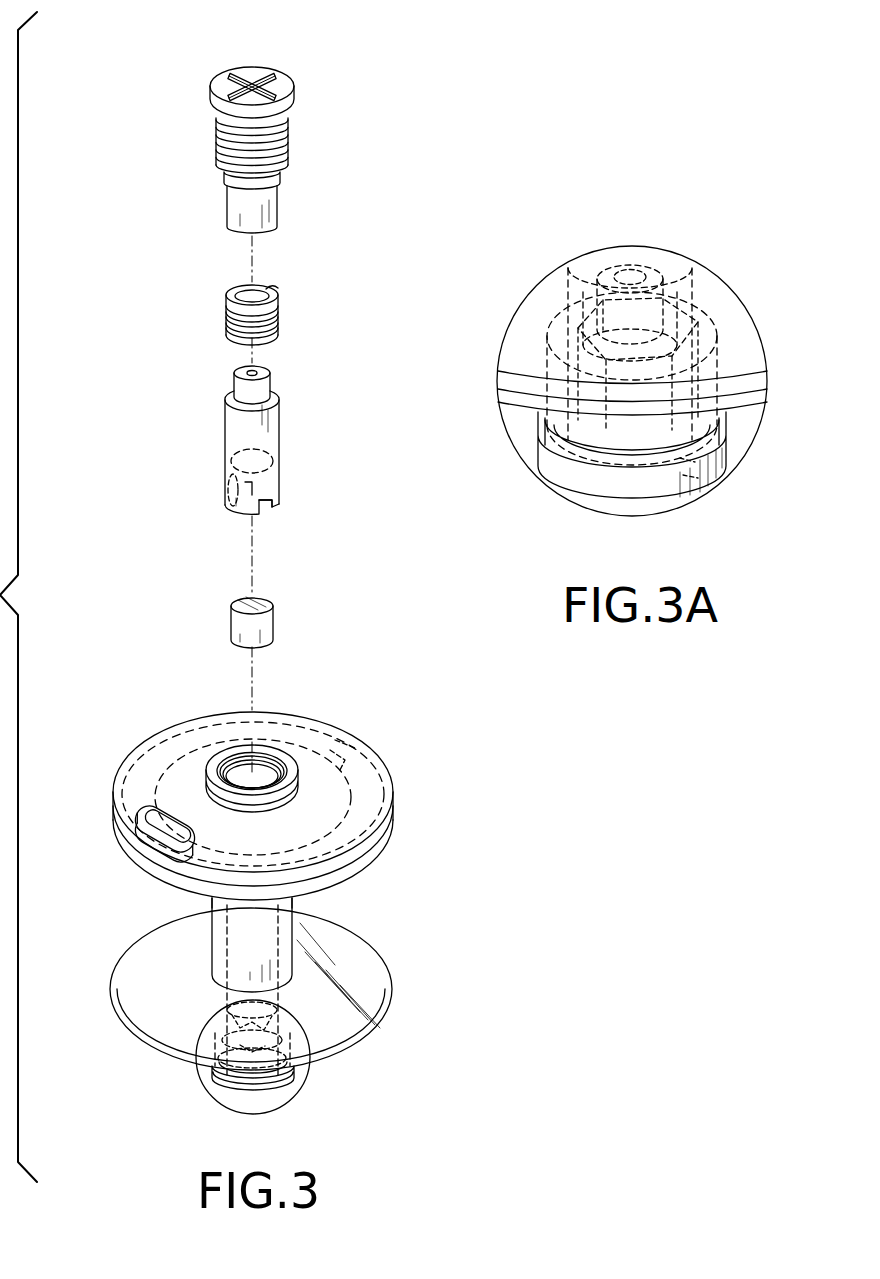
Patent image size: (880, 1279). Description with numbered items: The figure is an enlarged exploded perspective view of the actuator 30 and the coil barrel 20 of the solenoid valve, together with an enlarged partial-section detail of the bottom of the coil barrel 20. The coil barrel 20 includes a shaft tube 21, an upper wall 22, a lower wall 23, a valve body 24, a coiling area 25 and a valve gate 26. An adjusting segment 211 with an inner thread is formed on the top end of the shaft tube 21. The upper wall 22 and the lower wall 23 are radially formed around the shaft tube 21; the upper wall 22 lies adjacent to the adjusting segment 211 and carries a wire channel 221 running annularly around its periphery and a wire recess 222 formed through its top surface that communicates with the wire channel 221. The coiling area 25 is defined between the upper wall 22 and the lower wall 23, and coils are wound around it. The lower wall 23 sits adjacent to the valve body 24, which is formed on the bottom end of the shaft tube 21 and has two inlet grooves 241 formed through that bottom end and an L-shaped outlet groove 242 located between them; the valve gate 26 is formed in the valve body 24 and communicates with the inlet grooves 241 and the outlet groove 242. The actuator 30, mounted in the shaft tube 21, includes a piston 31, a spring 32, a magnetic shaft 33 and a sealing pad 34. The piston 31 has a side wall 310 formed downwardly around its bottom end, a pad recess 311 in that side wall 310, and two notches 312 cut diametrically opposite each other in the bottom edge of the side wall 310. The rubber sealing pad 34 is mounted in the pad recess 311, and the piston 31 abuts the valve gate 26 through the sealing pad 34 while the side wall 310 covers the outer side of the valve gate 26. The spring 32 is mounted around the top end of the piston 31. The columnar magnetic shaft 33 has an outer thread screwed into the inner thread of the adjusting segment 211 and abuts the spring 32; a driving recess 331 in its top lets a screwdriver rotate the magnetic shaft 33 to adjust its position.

In FIG. 3, the coil barrel 20 is at (410, 778).
In FIG. 3, the shaft tube 21 is at (205, 955).
In FIG. 3, the adjusting segment 211 is at (237, 772).
In FIG. 3, the upper wall 22 is at (150, 884).
In FIG. 3, the wire channel 221 is at (137, 850).
In FIG. 3, the wire recess 222 is at (148, 822).
In FIG. 3, the lower wall 23 is at (372, 978).
In FIG. 3, the valve body 24 is at (210, 1092).
In FIG. 3A, the valve body 24 is at (558, 468).
In FIG. 3A, the inlet grooves 241 is at (700, 482).
In FIG. 3A, the outlet groove 242 is at (556, 344).
In FIG. 3, the coiling area 25 is at (326, 900).
In FIG. 3A, the valve gate 26 is at (665, 266).
In FIG. 3, the actuator 30 is at (140, 82).
In FIG. 3, the piston 31 is at (221, 408).
In FIG. 3, the side wall 310 is at (277, 470).
In FIG. 3, the pad recess 311 is at (238, 512).
In FIG. 3, the notches 312 is at (268, 508).
In FIG. 3, the spring 32 is at (278, 288).
In FIG. 3, the magnetic shaft 33 is at (300, 137).
In FIG. 3, the driving recess 331 is at (271, 80).
In FIG. 3, the sealing pad 34 is at (272, 622).